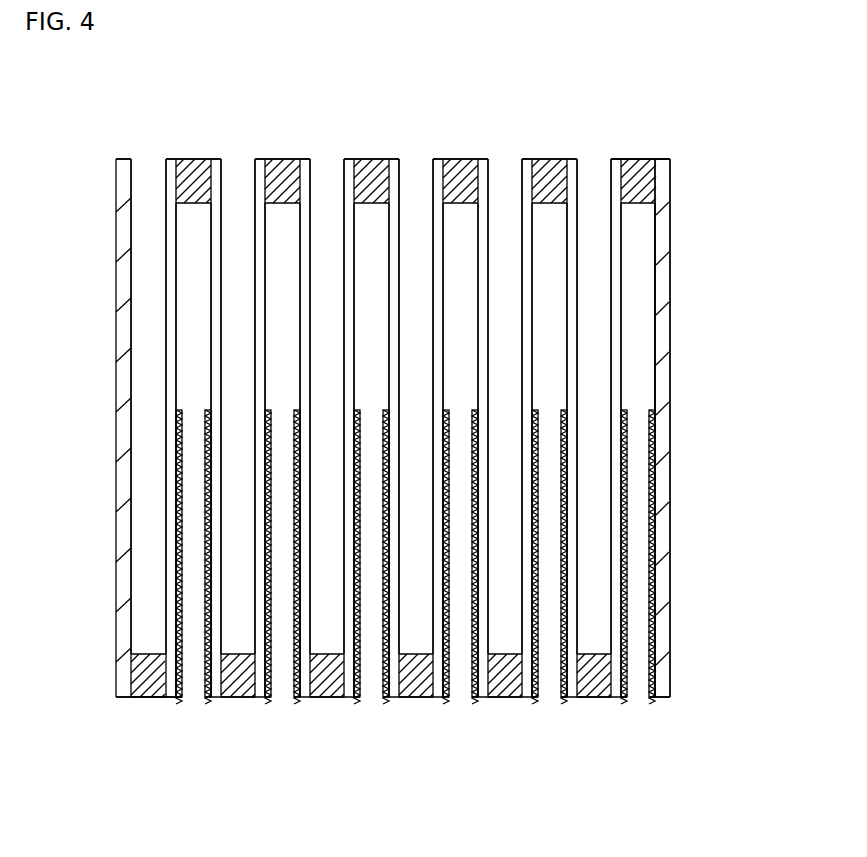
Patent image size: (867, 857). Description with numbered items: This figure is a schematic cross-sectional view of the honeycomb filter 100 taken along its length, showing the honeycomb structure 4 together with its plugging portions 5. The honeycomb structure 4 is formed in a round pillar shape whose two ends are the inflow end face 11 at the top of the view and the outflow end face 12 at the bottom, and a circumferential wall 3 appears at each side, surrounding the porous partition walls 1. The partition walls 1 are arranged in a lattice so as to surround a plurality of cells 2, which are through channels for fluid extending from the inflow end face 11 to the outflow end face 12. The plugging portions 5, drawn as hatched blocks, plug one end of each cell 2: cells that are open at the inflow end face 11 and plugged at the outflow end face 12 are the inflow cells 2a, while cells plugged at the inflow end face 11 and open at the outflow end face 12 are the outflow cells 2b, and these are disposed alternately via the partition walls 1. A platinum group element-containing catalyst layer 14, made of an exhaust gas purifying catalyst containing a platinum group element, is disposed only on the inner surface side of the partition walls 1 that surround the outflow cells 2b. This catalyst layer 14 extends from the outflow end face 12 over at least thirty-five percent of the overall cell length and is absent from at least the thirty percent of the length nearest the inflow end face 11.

The honeycomb filter 100 is at (754, 62).
The partition walls 1 is at (577, 220).
The cells 2 is at (393, 421).
The inflow cells 2a is at (497, 215).
The outflow cells 2b is at (548, 630).
The circumferential wall 3 is at (127, 327).
The honeycomb structure 4 is at (678, 141).
The plugging portions 5 is at (375, 165).
The inflow end face 11 is at (154, 144).
The outflow end face 12 is at (182, 723).
The platinum group element-containing catalyst layer 14 is at (533, 453).